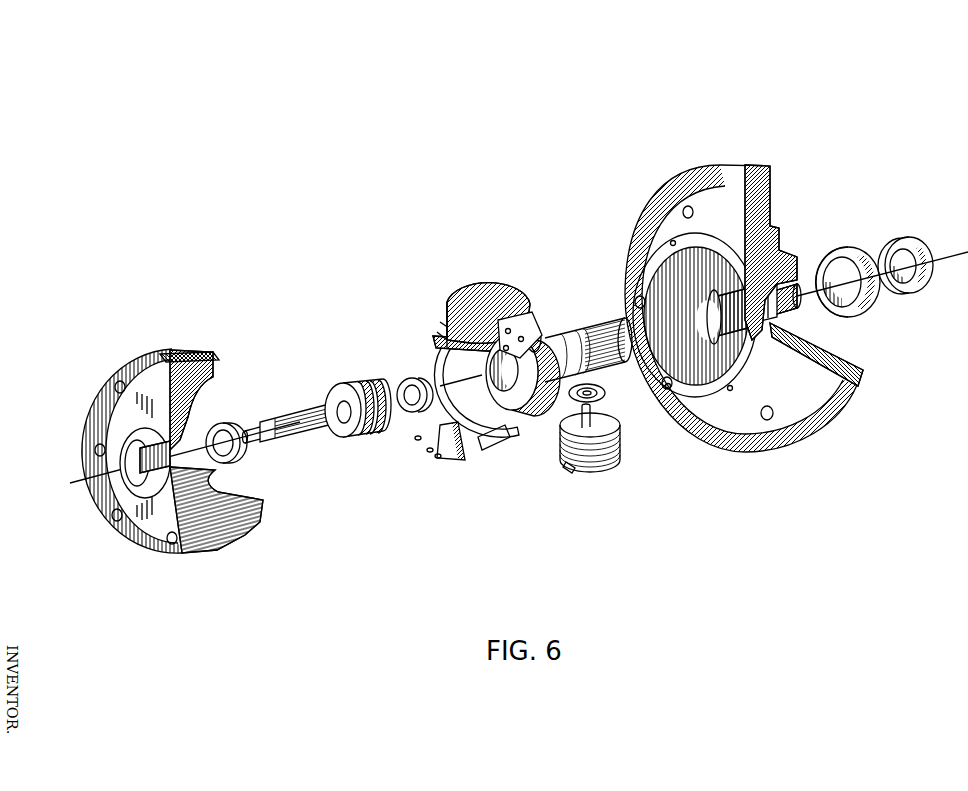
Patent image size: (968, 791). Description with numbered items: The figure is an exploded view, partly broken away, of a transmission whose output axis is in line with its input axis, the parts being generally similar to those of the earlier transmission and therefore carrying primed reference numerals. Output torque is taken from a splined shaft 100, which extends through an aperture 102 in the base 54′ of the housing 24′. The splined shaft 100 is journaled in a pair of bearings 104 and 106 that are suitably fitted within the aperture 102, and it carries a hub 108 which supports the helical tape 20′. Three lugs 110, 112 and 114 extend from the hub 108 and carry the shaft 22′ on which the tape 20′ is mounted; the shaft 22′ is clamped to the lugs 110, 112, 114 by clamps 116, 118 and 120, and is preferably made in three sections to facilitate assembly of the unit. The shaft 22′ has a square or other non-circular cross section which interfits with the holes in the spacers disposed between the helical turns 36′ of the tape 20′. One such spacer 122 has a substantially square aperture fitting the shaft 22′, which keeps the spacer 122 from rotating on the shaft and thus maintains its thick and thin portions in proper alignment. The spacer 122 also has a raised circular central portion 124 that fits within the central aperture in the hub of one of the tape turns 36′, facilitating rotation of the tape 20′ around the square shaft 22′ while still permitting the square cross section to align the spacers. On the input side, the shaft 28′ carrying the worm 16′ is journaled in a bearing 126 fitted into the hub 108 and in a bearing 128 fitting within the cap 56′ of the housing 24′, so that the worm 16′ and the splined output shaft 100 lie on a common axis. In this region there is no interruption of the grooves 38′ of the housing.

The worm 16′ is at (370, 440).
The helical tape 20′ is at (494, 281).
The shaft 22′ is at (437, 362).
The housing 24′ is at (219, 549).
The shaft 28′ is at (312, 432).
The helical turns 36′ is at (456, 288).
The grooves 38′ is at (202, 372).
The base 54′ is at (771, 230).
The cap 56′ is at (140, 392).
The splined shaft 100 is at (572, 344).
The aperture 102 is at (778, 284).
The bearing 104 is at (914, 239).
The bearing 106 is at (861, 249).
The hub 108 is at (544, 394).
The lug 110 is at (517, 412).
The lug 112 is at (537, 343).
The lug 114 is at (437, 337).
The clamp 116 is at (459, 461).
The clamp 118 is at (515, 325).
The clamp 120 is at (440, 328).
The spacer 122 is at (643, 486).
The raised circular central portion 124 is at (609, 395).
The bearing 126 is at (400, 377).
The bearing 128 is at (226, 423).